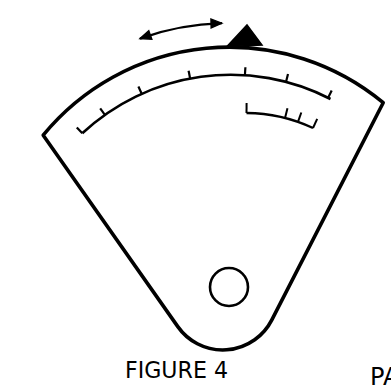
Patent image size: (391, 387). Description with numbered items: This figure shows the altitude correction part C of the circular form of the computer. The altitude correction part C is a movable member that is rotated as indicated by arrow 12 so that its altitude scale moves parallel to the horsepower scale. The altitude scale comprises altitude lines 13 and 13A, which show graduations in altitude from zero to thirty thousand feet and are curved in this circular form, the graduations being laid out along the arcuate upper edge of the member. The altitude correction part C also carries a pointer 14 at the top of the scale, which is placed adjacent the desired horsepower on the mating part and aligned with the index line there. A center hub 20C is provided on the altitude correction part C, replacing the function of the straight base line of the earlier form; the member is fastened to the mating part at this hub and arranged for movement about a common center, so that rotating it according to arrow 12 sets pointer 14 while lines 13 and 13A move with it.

The altitude correction part C is at (107, 228).
The arrow 12 is at (171, 26).
The altitude line 13 is at (296, 122).
The altitude line 13A is at (188, 84).
The pointer 14 is at (280, 19).
The center hub 20C is at (248, 290).